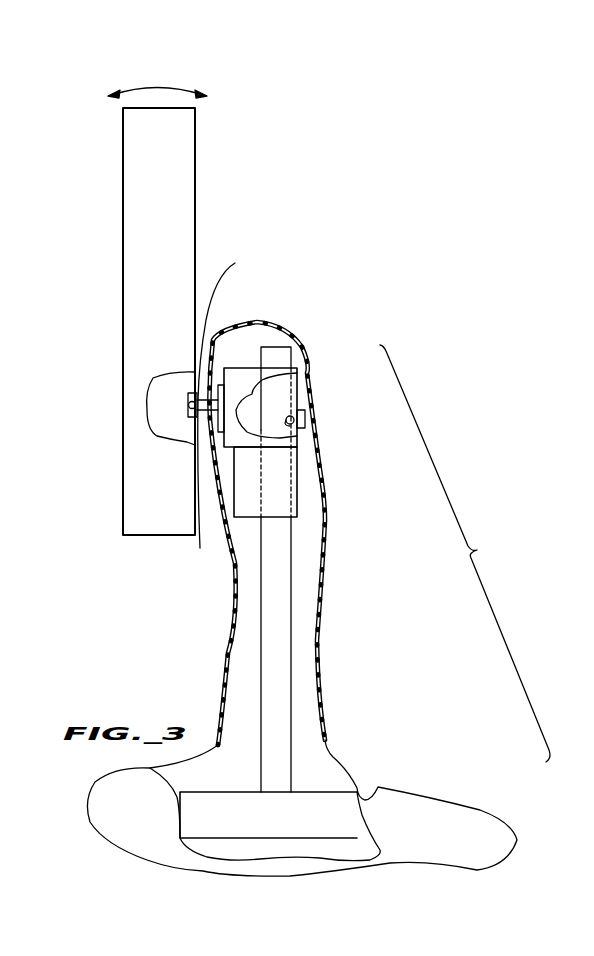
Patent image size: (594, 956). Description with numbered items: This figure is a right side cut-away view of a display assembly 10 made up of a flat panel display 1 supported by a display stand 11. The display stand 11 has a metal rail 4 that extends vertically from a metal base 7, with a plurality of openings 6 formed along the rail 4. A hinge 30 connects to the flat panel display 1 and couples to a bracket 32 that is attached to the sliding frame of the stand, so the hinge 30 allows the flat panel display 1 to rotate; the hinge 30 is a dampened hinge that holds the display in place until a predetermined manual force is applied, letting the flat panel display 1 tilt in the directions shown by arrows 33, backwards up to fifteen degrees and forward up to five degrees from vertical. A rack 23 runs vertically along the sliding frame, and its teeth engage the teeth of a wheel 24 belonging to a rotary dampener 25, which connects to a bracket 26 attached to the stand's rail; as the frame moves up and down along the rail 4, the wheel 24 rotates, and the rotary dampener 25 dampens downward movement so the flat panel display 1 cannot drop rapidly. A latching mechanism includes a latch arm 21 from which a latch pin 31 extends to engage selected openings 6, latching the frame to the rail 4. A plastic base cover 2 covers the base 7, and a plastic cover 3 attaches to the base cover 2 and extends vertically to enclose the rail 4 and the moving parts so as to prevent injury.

The flat panel display 1 is at (186, 188).
The base cover 2 is at (448, 820).
The cover 3 is at (343, 765).
The rail 4 is at (268, 600).
The openings 6 is at (295, 388).
The base 7 is at (215, 832).
The display assembly 10 is at (108, 200).
The display stand 11 is at (348, 553).
The latch arm 21 is at (306, 420).
The rack 23 is at (327, 503).
The wheel 24 is at (395, 456).
The rotary dampener 25 is at (223, 368).
The bracket 26 is at (243, 372).
The hinge 30 is at (232, 400).
The latch pin 31 is at (292, 424).
The bracket 32 is at (200, 548).
The arrows 33 is at (158, 83).